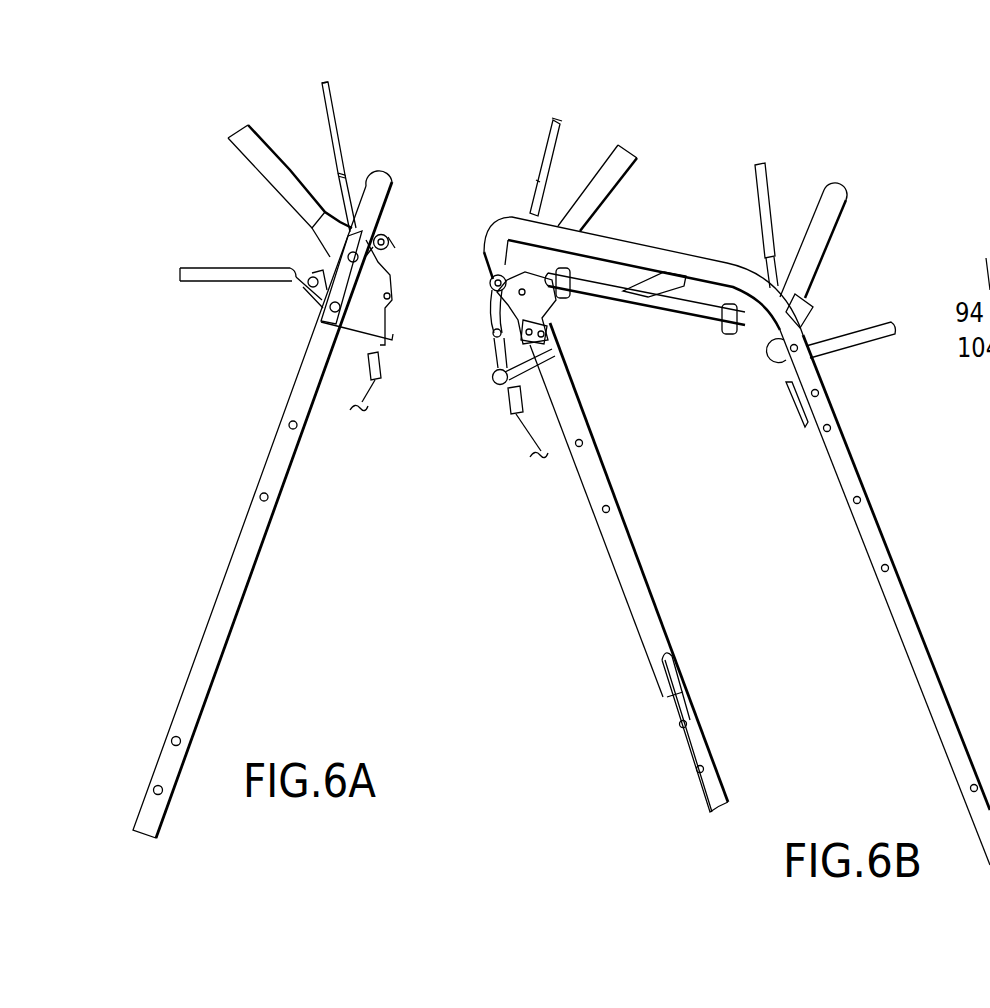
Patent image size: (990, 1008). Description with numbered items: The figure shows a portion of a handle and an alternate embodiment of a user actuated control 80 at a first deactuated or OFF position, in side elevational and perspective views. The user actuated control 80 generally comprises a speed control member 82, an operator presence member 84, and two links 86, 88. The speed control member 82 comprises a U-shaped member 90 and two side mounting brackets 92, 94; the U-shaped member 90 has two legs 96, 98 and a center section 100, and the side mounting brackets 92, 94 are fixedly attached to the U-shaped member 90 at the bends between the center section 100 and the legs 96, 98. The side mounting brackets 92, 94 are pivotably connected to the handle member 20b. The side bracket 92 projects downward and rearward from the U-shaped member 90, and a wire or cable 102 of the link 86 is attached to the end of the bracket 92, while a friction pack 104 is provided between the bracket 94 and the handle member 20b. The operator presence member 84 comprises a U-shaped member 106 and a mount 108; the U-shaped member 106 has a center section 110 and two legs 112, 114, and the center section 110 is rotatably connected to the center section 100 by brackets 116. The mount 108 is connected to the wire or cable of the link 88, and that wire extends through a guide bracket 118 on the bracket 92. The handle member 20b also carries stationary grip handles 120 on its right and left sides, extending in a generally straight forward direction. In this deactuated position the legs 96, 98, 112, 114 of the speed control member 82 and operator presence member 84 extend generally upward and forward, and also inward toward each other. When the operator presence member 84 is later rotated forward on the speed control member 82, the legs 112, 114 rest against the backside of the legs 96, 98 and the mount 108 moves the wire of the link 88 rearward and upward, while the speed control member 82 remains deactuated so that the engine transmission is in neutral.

In FIG. 6A, the handle member 20b is at (216, 606).
In FIG. 6B, the handle member 20b is at (940, 677).
In FIG. 6A, the user actuated control 80 is at (380, 136).
In FIG. 6B, the user actuated control 80 is at (597, 138).
In FIG. 6A, the speed control member 82 is at (262, 179).
In FIG. 6A, the operator presence member 84 is at (328, 84).
In FIG. 6A, the link 86 is at (365, 381).
In FIG. 6B, the link 86 is at (525, 432).
In FIG. 6B, the link 88 is at (570, 357).
In FIG. 6A, the U-shaped member 90 is at (240, 130).
In FIG. 6B, the U-shaped member 90 is at (845, 203).
In FIG. 6A, the side mounting bracket 92 is at (378, 282).
In FIG. 6B, the side mounting bracket 92 is at (493, 323).
In FIG. 6B, the side mounting bracket 94 is at (813, 317).
In FIG. 6B, the leg 96 is at (835, 241).
In FIG. 6B, the leg 98 is at (625, 158).
In FIG. 6B, the center section 100 is at (658, 322).
In FIG. 6B, the wire or cable 102 is at (494, 364).
In FIG. 6B, the friction pack 104 is at (773, 358).
In FIG. 6A, the U-shaped member 106 is at (333, 108).
In FIG. 6B, the U-shaped member 106 is at (538, 180).
In FIG. 6A, the mount 108 is at (392, 245).
In FIG. 6B, the mount 108 is at (495, 280).
In FIG. 6B, the center section 110 is at (618, 303).
In FIG. 6B, the leg 112 is at (768, 173).
In FIG. 6B, the leg 114 is at (548, 125).
In FIG. 6B, the bracket 116 is at (566, 285).
In FIG. 6B, the guide bracket 118 is at (496, 330).
In FIG. 6A, the stationary grip handle 120 is at (247, 284).
In FIG. 6B, the stationary grip handle 120 is at (837, 352).